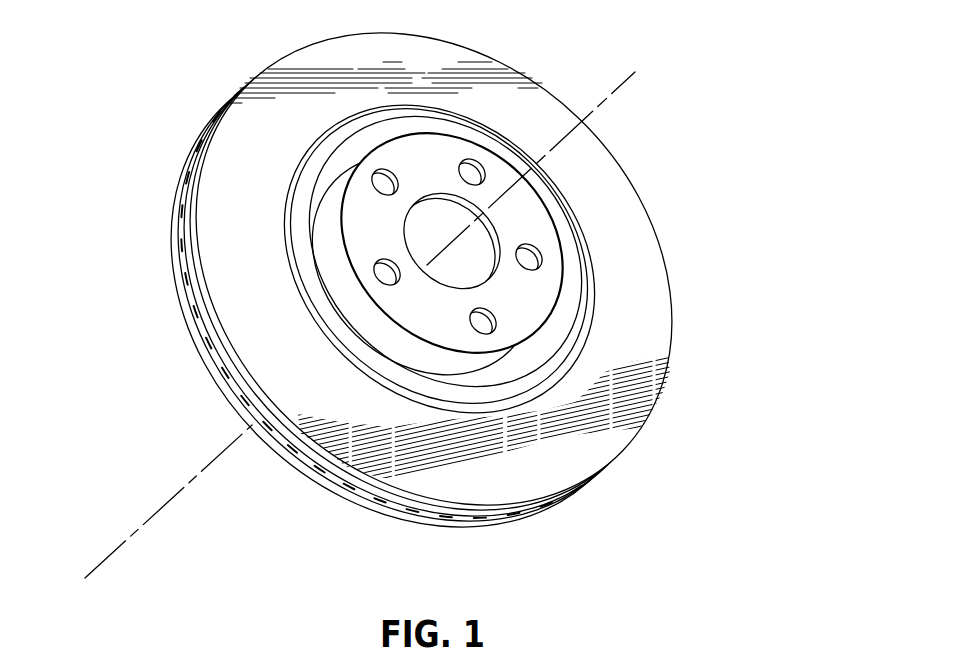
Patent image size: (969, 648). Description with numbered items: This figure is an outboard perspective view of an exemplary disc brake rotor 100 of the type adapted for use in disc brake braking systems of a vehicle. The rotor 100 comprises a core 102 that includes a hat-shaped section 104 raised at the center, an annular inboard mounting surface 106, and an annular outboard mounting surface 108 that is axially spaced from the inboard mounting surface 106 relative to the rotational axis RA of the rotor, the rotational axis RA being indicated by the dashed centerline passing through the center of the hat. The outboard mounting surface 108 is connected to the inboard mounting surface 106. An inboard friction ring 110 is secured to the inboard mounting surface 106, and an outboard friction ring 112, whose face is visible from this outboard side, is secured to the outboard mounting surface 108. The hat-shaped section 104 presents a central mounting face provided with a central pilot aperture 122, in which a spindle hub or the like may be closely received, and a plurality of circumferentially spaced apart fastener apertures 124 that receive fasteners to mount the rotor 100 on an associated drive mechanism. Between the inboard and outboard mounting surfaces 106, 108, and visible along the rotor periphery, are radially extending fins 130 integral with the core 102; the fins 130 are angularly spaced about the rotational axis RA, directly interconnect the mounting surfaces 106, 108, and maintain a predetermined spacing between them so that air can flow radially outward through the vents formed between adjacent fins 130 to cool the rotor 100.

The disc brake rotor 100 is at (156, 96).
The core 102 is at (547, 383).
The hat-shaped section 104 is at (393, 375).
The inboard mounting surface 106 is at (230, 377).
The outboard mounting surface 108 is at (200, 289).
The inboard friction ring 110 is at (462, 523).
The outboard friction ring 112 is at (653, 327).
The central pilot aperture 122 is at (433, 193).
The fastener apertures 124 is at (474, 162).
The fins 130 is at (278, 433).
The rotational axis RA is at (360, 328).